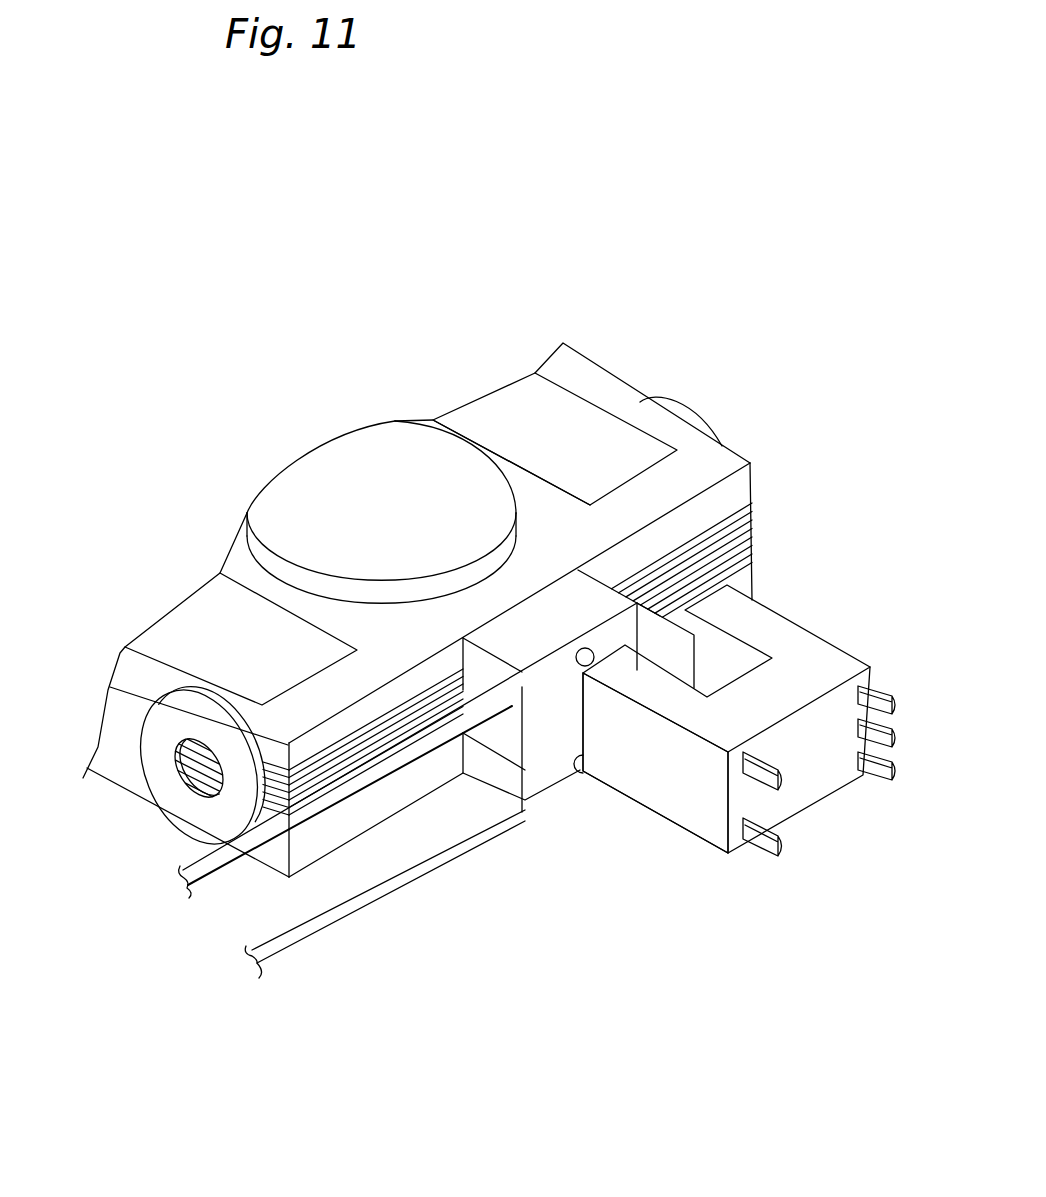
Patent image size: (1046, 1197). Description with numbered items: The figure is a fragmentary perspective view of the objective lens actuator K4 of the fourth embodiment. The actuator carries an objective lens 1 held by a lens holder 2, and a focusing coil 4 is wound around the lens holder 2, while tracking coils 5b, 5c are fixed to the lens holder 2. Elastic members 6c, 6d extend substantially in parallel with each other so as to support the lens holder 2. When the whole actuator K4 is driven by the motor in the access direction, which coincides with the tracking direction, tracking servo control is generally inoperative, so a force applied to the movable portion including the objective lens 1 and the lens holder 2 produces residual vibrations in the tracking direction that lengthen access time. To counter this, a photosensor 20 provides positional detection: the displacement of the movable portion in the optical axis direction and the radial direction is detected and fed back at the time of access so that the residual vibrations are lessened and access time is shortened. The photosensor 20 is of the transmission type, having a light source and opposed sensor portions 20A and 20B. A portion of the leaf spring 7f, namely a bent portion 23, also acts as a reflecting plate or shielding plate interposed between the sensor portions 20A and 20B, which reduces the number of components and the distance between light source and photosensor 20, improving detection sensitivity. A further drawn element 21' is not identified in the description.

The objective lens 1 is at (427, 485).
The lens holder 2 is at (712, 460).
The focusing coil 4 is at (755, 530).
The tracking coil 5b is at (677, 414).
The tracking coil 5c is at (170, 780).
The elastic member 6c is at (317, 802).
The elastic member 6d is at (423, 862).
The leaf spring 7f is at (545, 747).
The photosensor 20 is at (756, 745).
The sensor portion 20A is at (630, 677).
The sensor portion 20B is at (740, 610).
The wire 21' is at (408, 735).
The bent portion 23 is at (680, 658).
The objective lens actuator K4 is at (657, 243).